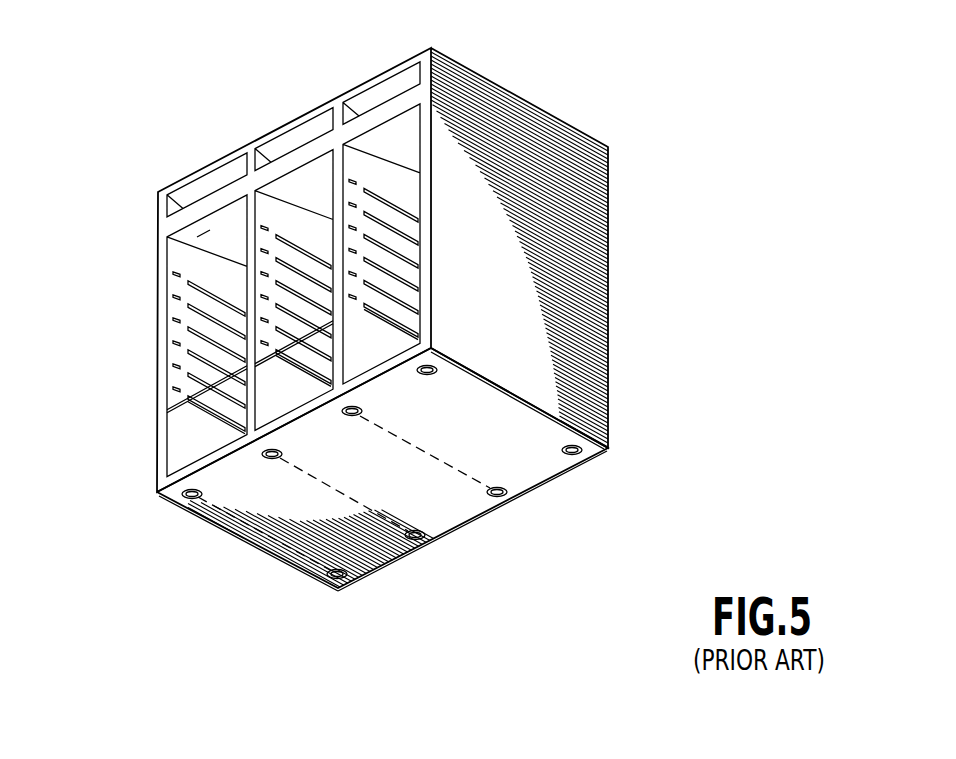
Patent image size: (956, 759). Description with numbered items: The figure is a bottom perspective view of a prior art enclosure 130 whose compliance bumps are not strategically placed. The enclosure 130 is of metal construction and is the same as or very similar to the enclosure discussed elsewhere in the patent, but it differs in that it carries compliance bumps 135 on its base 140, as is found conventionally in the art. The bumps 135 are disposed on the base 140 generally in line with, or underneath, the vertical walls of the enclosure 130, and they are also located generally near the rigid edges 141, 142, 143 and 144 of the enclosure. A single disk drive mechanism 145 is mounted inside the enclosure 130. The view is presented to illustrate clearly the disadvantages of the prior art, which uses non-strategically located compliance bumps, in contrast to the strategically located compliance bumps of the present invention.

The enclosure 130 is at (609, 78).
The compliance bumps 135 is at (428, 374).
The base 140 is at (433, 490).
The rigid edge 141 is at (294, 578).
The rigid edge 142 is at (205, 458).
The rigid edge 143 is at (461, 368).
The rigid edge 144 is at (488, 517).
The single disk drive mechanism 145 is at (182, 240).